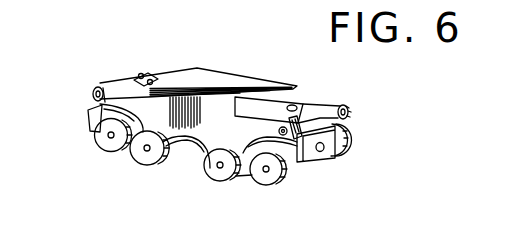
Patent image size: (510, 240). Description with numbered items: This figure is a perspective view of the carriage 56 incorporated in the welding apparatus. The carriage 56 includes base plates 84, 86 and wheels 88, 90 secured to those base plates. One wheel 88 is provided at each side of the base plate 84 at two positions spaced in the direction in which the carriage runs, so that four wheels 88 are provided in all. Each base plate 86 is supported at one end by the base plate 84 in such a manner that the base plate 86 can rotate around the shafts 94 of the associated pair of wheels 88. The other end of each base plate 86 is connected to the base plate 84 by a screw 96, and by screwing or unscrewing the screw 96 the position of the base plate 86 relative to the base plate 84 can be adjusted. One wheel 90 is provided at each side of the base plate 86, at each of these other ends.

The carriage 56 is at (255, 78).
The base plate 84 is at (191, 82).
The base plate 86 is at (90, 105).
The screw 96 is at (140, 80).
The wheel 90 is at (100, 142).
The wheel 88 is at (140, 157).
The shaft 94 is at (146, 151).